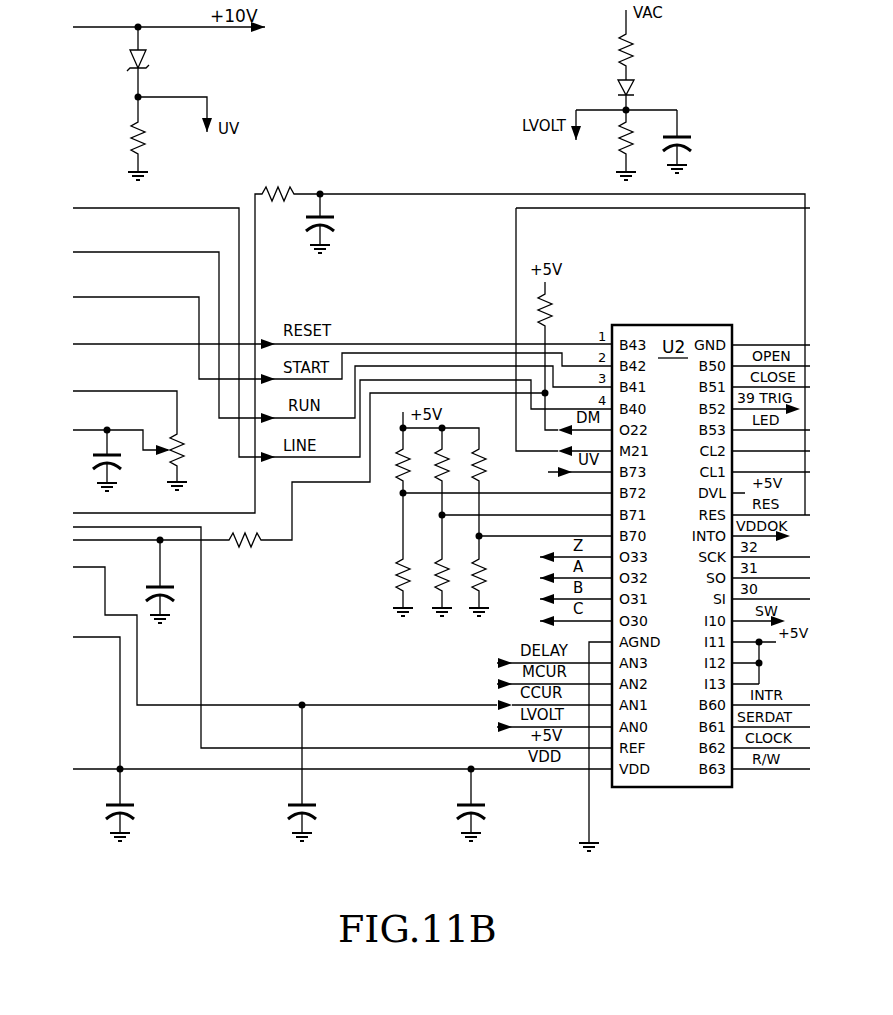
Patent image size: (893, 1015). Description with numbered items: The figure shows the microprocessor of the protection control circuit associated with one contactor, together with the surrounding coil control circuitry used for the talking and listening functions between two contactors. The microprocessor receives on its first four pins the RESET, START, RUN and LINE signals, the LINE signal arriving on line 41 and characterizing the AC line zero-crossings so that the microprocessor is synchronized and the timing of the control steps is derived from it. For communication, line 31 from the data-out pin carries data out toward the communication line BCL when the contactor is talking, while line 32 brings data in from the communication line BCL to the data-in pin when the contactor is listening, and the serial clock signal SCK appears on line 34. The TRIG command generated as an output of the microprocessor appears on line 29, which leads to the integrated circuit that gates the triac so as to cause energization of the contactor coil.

The line 29 is at (790, 417).
The line 31 is at (788, 578).
The line 32 is at (788, 599).
The line 34 is at (788, 557).
The line 41 is at (318, 458).